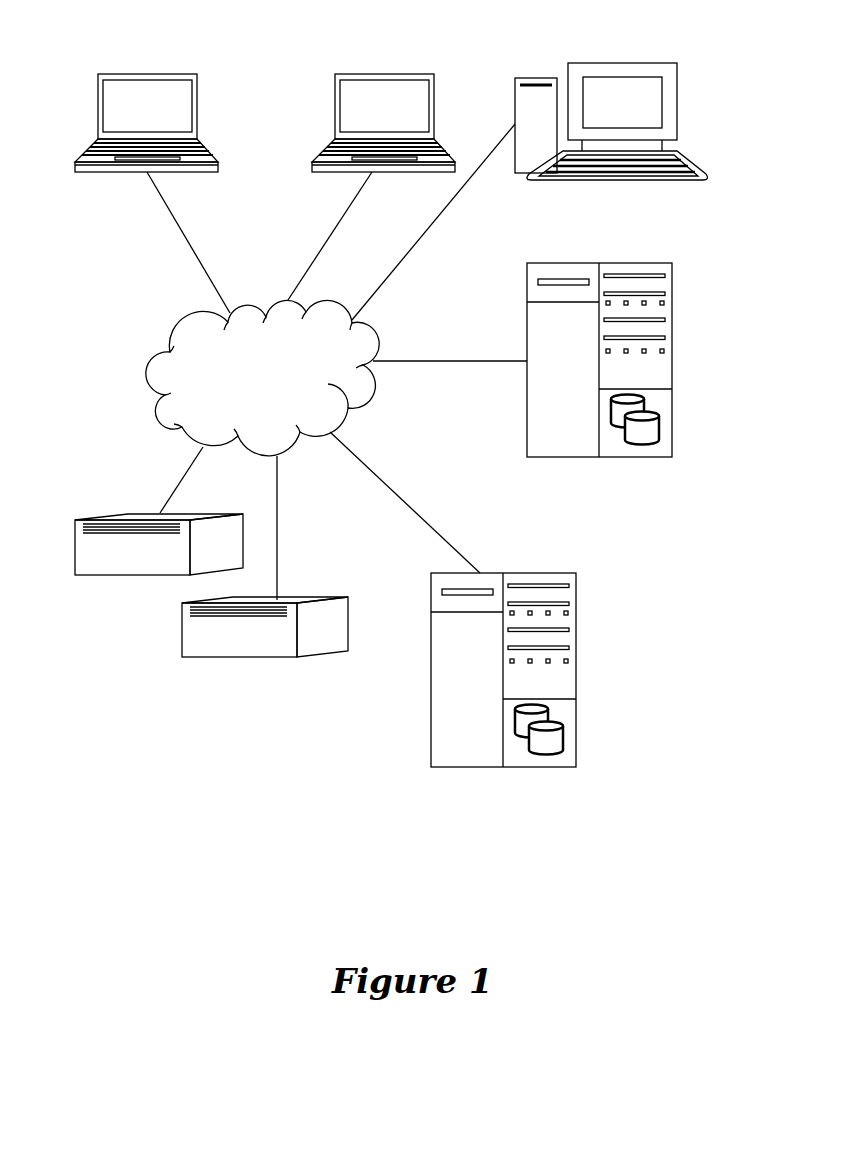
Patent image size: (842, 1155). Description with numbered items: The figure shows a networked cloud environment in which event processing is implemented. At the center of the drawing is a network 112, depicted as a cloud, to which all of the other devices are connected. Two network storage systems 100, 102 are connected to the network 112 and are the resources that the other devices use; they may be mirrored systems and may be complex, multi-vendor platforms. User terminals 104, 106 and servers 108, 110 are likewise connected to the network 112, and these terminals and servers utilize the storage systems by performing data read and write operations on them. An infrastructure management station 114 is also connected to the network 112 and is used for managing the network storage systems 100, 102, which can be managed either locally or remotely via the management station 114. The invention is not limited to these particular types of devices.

The network storage system 100 is at (673, 282).
The network storage system 102 is at (575, 630).
The user terminal 104 is at (157, 73).
The user terminal 106 is at (382, 73).
The server 108 is at (75, 555).
The server 110 is at (182, 632).
The network 112 is at (283, 383).
The infrastructure management station 114 is at (635, 62).